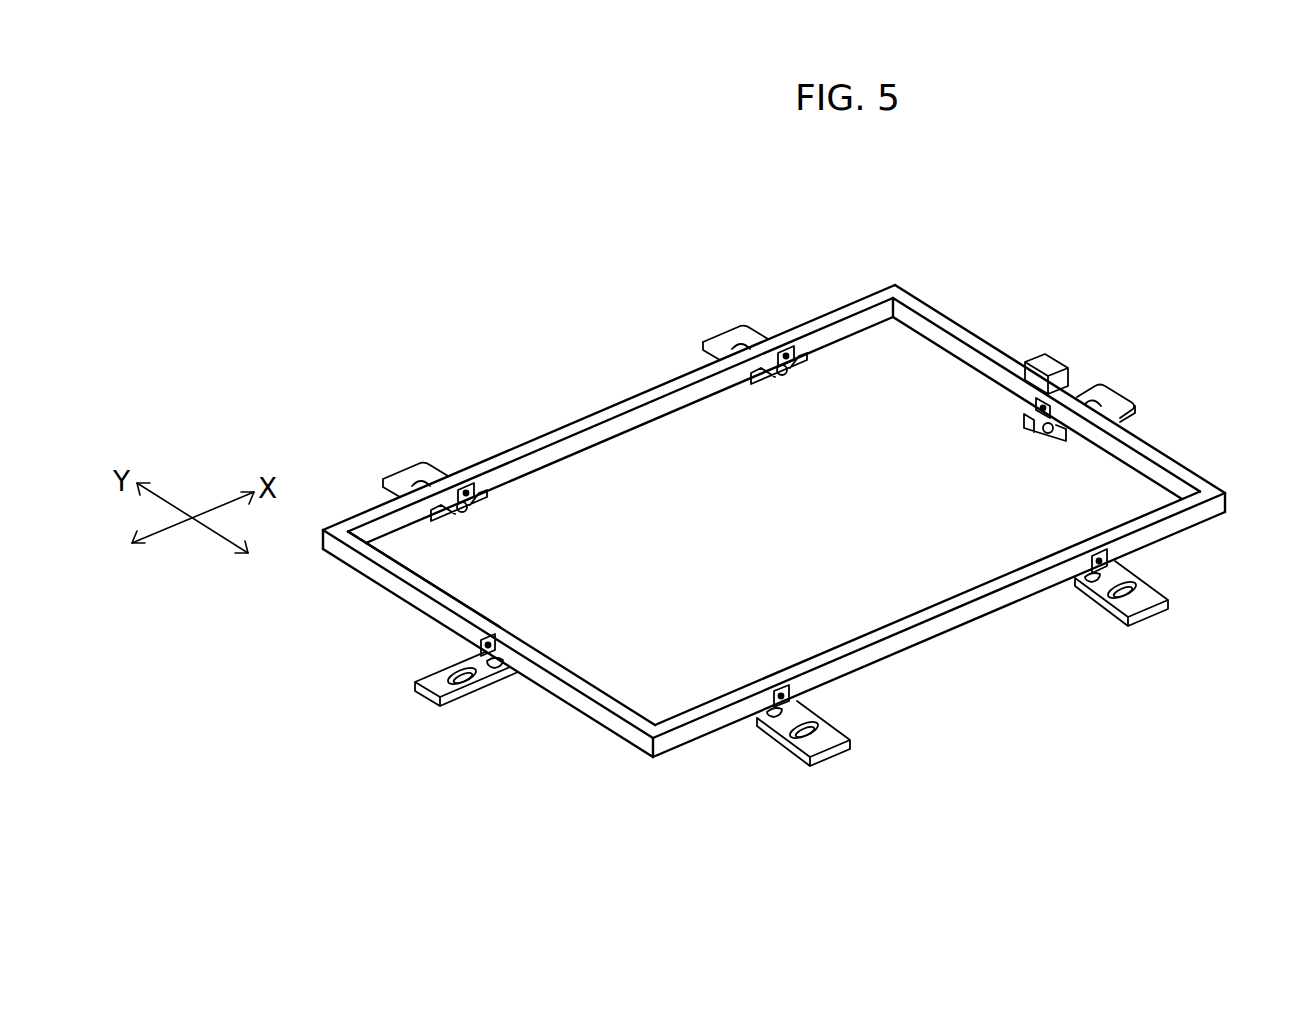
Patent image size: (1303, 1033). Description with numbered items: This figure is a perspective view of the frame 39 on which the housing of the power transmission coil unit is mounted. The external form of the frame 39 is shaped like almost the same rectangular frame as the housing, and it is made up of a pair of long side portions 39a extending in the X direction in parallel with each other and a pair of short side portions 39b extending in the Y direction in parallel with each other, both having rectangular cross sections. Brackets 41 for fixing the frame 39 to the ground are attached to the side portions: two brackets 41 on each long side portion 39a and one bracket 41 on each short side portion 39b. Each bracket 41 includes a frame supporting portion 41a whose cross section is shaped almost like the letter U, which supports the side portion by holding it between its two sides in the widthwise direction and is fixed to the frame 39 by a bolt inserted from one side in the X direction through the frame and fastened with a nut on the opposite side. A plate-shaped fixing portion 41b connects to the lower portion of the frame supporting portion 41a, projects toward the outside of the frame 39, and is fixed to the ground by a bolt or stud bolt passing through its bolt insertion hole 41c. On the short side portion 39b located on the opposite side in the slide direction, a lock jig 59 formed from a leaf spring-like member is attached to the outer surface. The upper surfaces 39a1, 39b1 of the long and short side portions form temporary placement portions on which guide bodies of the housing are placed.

The frame 39 is at (774, 533).
The long side portion 39a is at (655, 382).
The short side portion 39b is at (1005, 362).
The upper surface of long side portion 39a1 is at (525, 453).
The upper surface of short side portion 39b1 is at (465, 607).
The bracket 41 is at (787, 534).
The frame supporting portion 41a is at (467, 487).
The fixing portion 41b is at (385, 483).
The bolt insertion hole 41c is at (1138, 590).
The lock jig 59 is at (1062, 370).